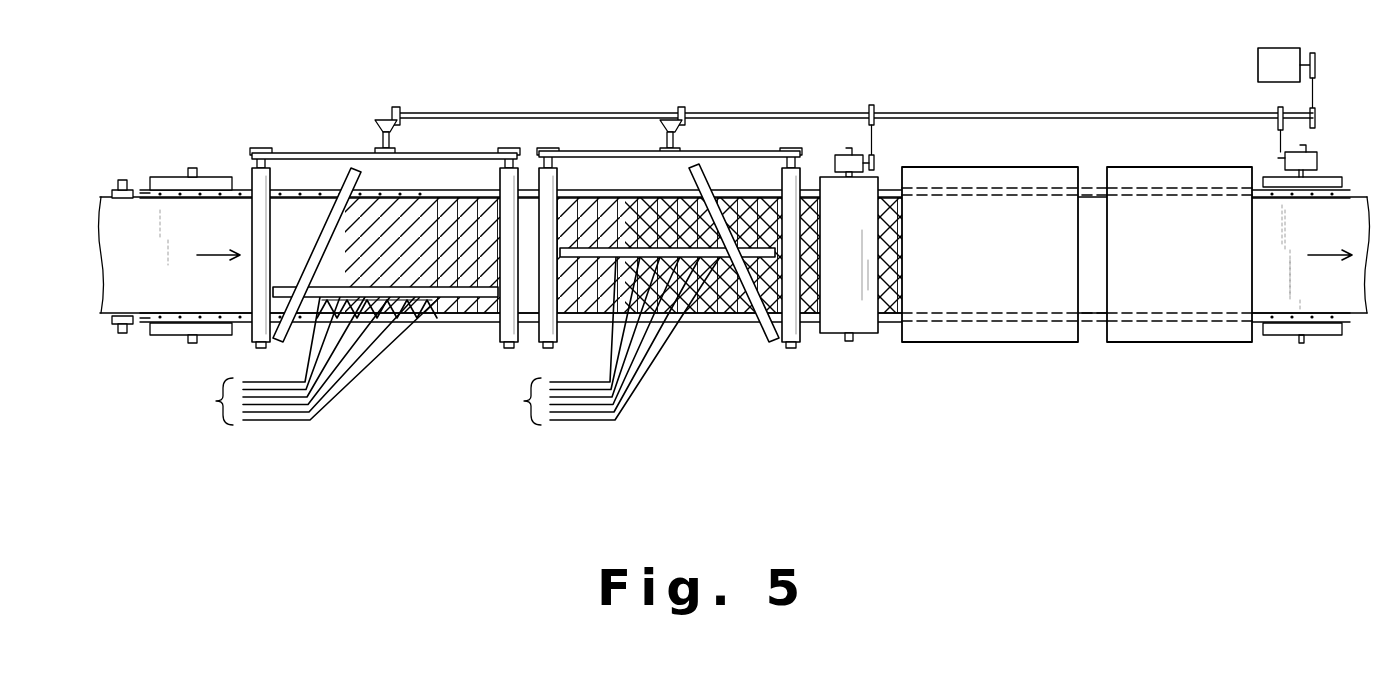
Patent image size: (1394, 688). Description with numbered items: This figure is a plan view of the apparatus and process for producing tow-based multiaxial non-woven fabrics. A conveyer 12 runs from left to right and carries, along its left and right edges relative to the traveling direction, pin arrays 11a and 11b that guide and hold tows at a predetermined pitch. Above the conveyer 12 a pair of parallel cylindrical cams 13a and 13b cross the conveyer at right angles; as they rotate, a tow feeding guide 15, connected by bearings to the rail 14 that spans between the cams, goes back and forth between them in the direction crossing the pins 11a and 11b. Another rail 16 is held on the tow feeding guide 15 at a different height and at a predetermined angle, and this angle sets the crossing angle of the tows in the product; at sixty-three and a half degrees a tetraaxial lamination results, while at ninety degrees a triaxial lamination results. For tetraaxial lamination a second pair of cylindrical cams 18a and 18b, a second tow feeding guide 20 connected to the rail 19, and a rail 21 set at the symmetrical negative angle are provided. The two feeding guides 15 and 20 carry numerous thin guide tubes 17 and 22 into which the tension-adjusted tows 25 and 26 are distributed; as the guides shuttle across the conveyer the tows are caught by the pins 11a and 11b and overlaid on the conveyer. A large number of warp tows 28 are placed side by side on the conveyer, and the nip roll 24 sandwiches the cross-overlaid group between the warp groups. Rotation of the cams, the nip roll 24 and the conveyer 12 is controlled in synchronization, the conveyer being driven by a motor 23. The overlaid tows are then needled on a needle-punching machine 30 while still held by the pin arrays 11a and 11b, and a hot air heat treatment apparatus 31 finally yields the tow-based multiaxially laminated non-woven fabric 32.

The pin array 11a is at (183, 195).
The pin array 11b is at (183, 318).
The conveyer 12 is at (208, 195).
The cylindrical cam 13a is at (270, 176).
The cylindrical cam 13b is at (503, 160).
The rail 14 is at (432, 287).
The tow feeding guide 15 is at (438, 325).
The rail 16 is at (345, 170).
The guide tubes 17 is at (390, 325).
The cylindrical cam 18a is at (555, 174).
The cylindrical cam 18b is at (781, 170).
The rail 19 is at (624, 248).
The tow feeding guide 20 is at (730, 320).
The rail 21 is at (698, 167).
The guide tubes 22 is at (680, 323).
The motor 23 is at (1258, 63).
The nip roll 24 is at (830, 322).
The tows 25 is at (307, 367).
The tows 26 is at (602, 347).
The tows 28 is at (103, 195).
The needle-punching machine 30 is at (968, 295).
The hot air heat treatment apparatus 31 is at (1138, 280).
The multiaxially laminated non-woven fabric 32 is at (1348, 213).